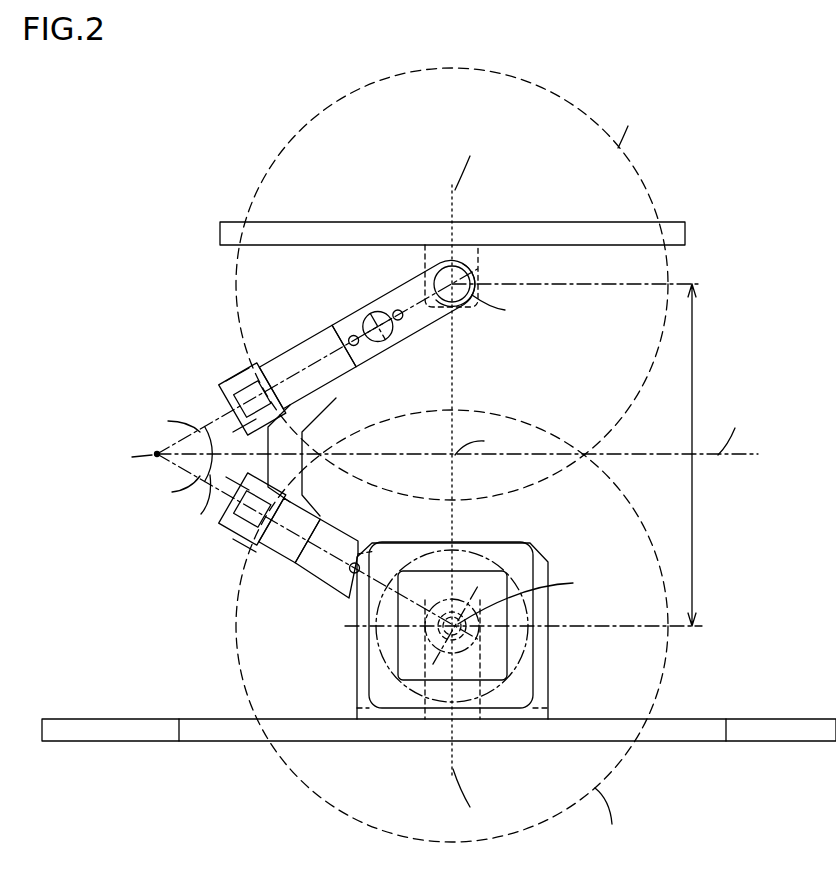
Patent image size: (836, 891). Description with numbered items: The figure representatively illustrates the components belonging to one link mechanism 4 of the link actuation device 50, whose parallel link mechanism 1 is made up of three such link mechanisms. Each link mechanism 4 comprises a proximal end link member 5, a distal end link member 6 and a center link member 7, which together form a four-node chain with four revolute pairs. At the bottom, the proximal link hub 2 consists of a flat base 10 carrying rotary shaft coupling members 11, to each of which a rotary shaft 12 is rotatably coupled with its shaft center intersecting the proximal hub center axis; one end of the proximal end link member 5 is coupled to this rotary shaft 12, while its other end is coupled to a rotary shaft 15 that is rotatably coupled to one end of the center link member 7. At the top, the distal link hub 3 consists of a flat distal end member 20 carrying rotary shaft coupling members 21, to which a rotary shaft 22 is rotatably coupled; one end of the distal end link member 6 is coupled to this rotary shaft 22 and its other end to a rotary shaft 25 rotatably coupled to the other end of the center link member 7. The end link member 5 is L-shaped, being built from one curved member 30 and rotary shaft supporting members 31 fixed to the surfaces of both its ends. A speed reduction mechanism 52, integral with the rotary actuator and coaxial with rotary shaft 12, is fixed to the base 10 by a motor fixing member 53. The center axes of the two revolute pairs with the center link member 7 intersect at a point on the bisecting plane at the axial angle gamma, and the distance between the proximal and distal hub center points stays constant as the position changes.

The parallel link mechanism 1 is at (226, 110).
The proximal link hub 2 is at (448, 790).
The distal link hub 3 is at (447, 176).
The link mechanism 4 is at (212, 350).
The proximal end link member 5 is at (190, 585).
The distal end link member 6 is at (192, 255).
The center link member 7 is at (302, 421).
The base 10 is at (396, 742).
The rotary shaft coupling member 11 is at (443, 692).
The rotary shaft 12 is at (468, 640).
The rotary shaft 15 is at (240, 534).
The distal end member 20 is at (393, 222).
The rotary shaft coupling member 21 is at (438, 255).
The rotary shaft 22 is at (465, 268).
The rotary shaft 25 is at (233, 400).
The curved member 30 is at (308, 340).
The rotary shaft supporting member 31 is at (372, 303).
The link actuation device 50 is at (750, 94).
The speed reduction mechanism 52 is at (492, 558).
The motor fixing member 53 is at (548, 613).